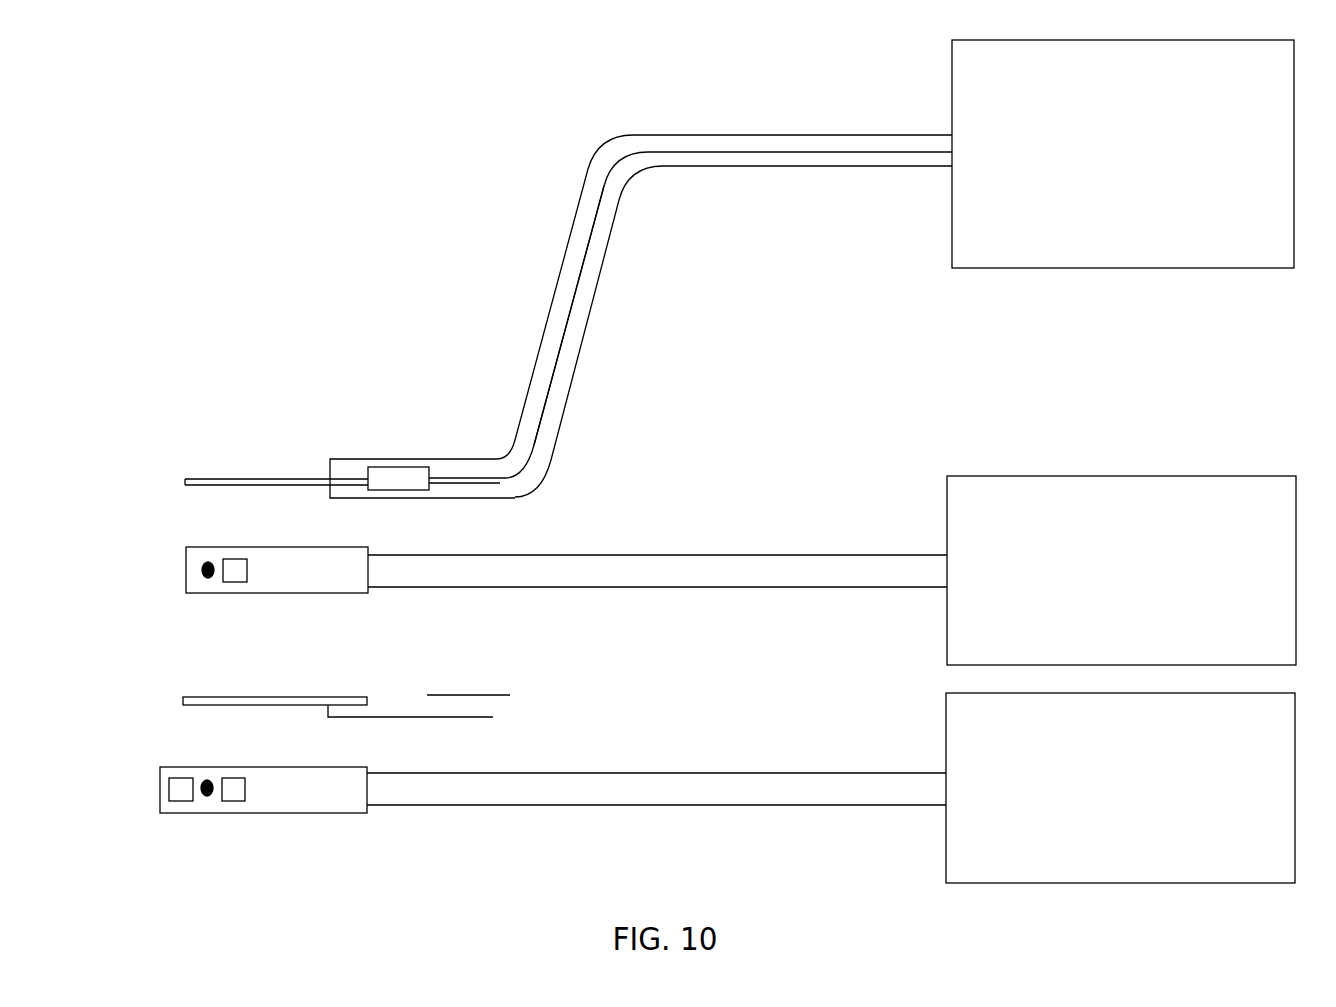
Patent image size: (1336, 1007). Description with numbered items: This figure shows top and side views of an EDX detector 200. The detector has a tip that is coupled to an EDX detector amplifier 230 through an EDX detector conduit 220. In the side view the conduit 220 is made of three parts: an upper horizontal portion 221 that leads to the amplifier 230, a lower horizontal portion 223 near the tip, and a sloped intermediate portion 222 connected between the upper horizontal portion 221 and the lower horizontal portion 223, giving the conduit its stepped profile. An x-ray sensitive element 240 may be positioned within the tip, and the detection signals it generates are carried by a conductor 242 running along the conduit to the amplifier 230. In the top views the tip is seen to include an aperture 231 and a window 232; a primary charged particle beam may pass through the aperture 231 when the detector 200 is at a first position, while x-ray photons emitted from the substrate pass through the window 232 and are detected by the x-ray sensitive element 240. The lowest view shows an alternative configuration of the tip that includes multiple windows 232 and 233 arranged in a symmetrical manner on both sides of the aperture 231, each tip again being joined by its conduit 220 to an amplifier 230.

The EDX detector 200 is at (776, 702).
The EDX detector conduit 220 is at (520, 587).
The upper horizontal portion 221 is at (814, 134).
The sloped intermediate portion 222 is at (574, 217).
The lower horizontal portion 223 is at (456, 457).
The EDX detector amplifier 230 is at (1107, 163).
The aperture 231 is at (203, 595).
The window 232 is at (235, 593).
The window 233 is at (172, 778).
The x-ray sensitive element 240 is at (382, 488).
The conductor 242 is at (568, 315).